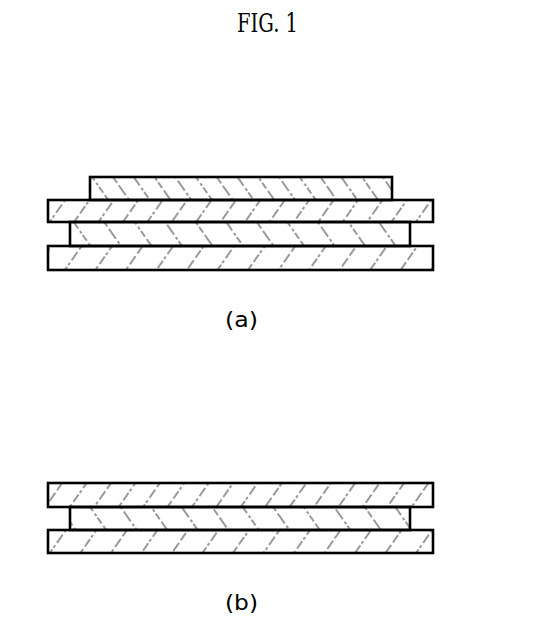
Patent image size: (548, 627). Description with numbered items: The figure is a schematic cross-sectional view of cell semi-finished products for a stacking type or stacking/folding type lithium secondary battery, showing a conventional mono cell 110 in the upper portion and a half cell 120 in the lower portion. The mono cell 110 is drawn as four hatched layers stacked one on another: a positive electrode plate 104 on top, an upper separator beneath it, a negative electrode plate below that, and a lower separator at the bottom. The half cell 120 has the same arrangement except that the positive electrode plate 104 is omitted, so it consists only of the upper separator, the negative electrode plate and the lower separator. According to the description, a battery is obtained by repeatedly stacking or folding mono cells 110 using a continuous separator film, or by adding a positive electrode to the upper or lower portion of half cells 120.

The mono cell 110 is at (148, 138).
The half cell 120 is at (151, 443).
The positive electrode plate 104 is at (392, 186).